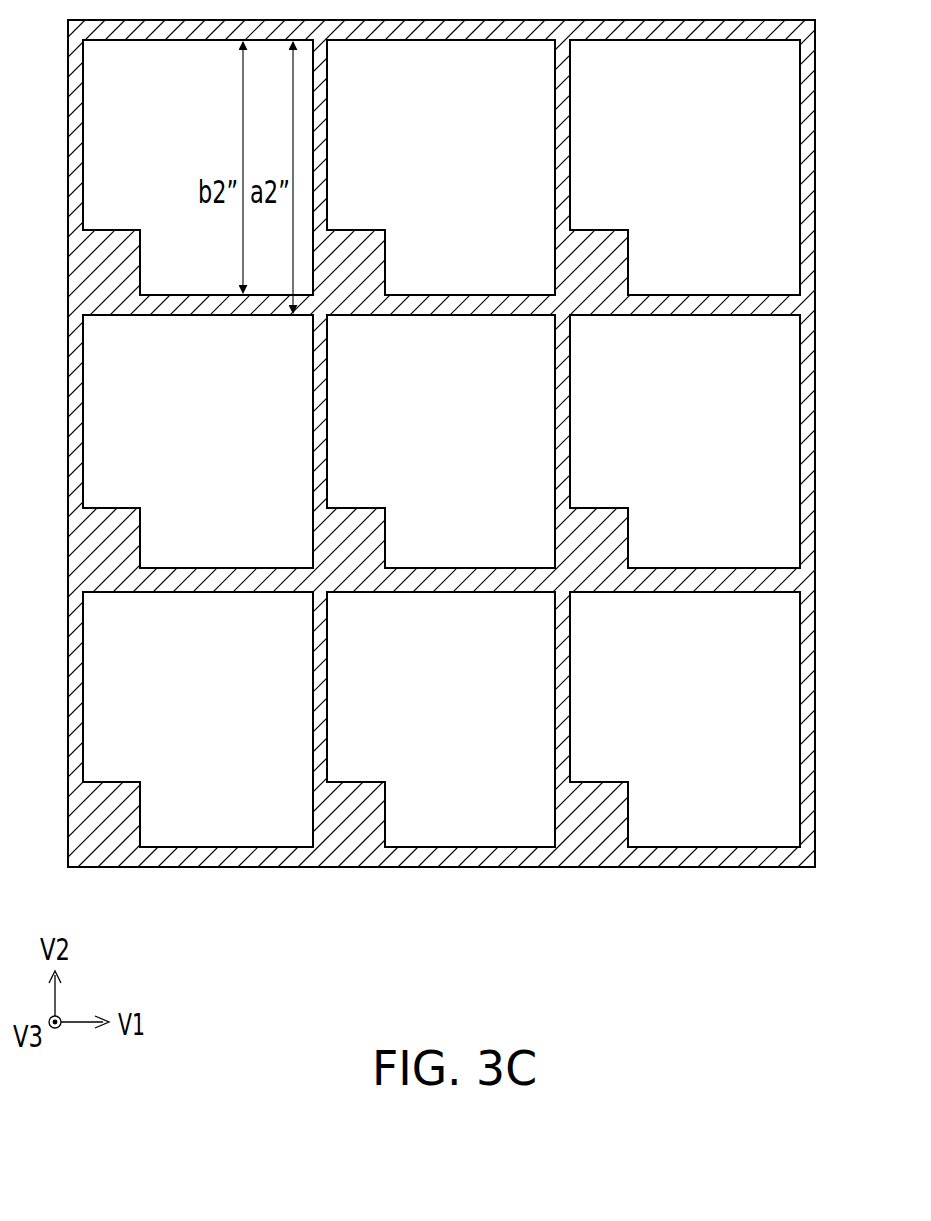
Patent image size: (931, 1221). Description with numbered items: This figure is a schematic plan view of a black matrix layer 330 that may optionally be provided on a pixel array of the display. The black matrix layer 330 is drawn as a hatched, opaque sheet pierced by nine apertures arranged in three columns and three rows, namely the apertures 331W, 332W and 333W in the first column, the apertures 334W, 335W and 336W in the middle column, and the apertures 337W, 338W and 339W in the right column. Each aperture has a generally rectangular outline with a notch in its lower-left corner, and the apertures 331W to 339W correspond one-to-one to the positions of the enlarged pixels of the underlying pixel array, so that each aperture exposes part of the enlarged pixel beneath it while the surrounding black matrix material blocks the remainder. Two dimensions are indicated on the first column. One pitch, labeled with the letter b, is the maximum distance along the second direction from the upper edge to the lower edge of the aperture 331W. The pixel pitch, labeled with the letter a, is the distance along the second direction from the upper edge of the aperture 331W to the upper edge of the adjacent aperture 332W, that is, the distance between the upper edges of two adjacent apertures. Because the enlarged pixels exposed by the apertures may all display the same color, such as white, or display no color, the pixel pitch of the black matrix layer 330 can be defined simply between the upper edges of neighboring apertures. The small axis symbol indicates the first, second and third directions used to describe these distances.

The black matrix layer 330 is at (855, 977).
The aperture 331W is at (132, 166).
The aperture 332W is at (176, 452).
The aperture 333W is at (176, 728).
The aperture 334W is at (419, 176).
The aperture 335W is at (419, 452).
The aperture 336W is at (419, 728).
The aperture 337W is at (662, 176).
The aperture 338W is at (662, 452).
The aperture 339W is at (662, 728).